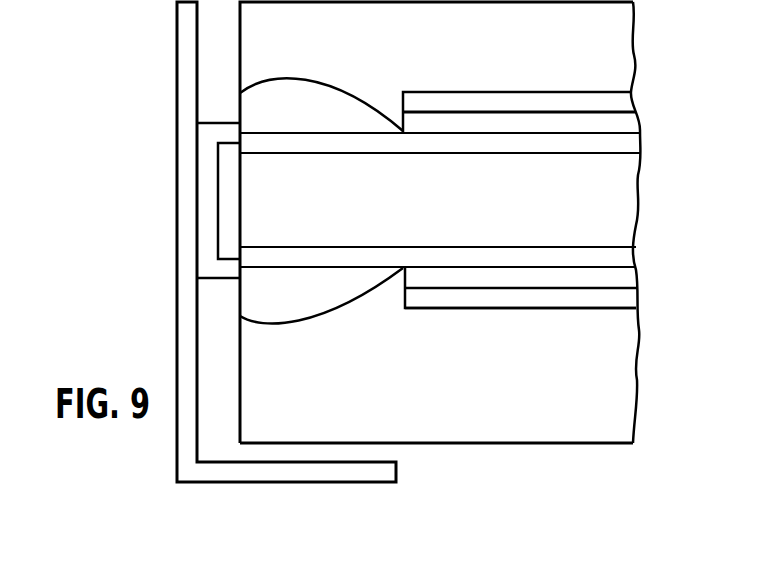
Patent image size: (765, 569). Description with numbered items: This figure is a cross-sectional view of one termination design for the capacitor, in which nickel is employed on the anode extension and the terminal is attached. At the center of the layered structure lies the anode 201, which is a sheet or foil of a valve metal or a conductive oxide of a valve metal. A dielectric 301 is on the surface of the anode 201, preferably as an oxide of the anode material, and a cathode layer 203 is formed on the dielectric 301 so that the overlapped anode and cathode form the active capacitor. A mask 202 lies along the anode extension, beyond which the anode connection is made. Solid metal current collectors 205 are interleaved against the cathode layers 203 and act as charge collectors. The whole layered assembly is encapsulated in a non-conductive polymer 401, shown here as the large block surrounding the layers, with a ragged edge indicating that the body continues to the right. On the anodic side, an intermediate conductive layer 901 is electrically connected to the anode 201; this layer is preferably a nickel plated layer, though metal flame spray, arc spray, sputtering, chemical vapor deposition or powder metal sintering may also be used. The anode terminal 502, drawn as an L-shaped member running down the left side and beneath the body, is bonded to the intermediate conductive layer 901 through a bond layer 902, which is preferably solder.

The anode 201 is at (267, 197).
The mask 202 is at (340, 105).
The cathode layer 203 is at (632, 123).
The solid metal current collector 205 is at (613, 308).
The dielectric 301 is at (420, 145).
The non-conductive polymer 401 is at (465, 408).
The anode terminal 502 is at (290, 481).
The intermediate conductive layer 901 is at (217, 215).
The bond layer 902 is at (212, 122).